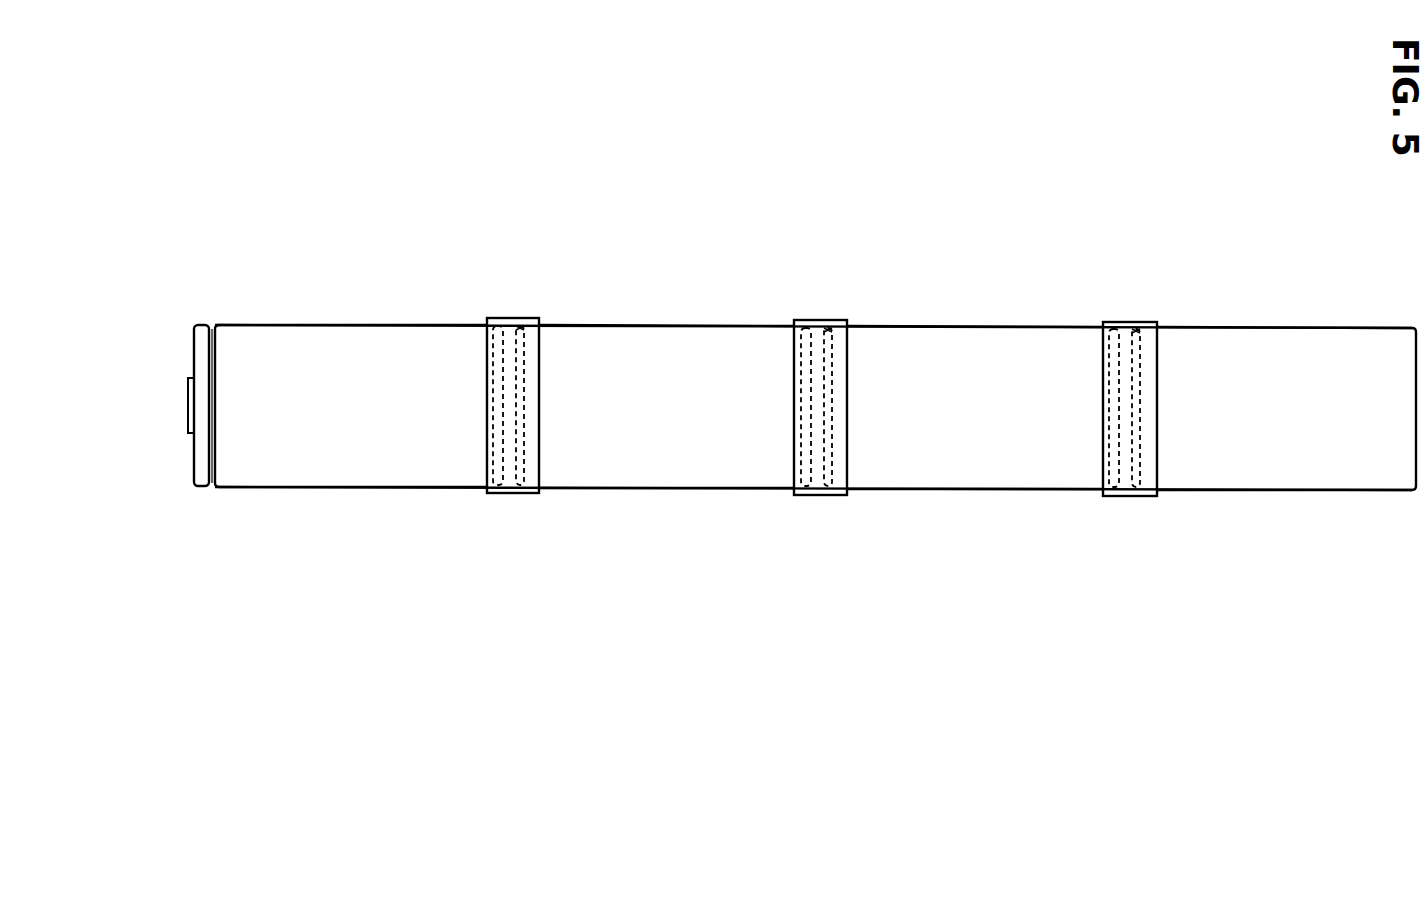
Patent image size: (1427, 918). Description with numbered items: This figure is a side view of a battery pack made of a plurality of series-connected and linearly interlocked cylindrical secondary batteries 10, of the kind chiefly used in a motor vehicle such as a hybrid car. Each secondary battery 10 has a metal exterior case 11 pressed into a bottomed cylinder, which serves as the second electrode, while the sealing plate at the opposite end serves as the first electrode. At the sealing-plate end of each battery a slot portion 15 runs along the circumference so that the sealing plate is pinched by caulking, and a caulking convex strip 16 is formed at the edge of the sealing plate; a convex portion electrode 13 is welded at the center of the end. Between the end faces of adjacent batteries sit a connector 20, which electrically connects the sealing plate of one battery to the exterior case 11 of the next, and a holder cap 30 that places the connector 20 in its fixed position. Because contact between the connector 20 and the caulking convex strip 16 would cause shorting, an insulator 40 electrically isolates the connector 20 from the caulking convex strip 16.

The secondary battery 10 is at (340, 310).
The exterior case 11 is at (367, 446).
The convex portion electrode 13 is at (190, 400).
The slot portion 15 is at (212, 495).
The caulking convex strip 16 is at (192, 472).
The connector 20 is at (482, 363).
The holder cap 30 is at (514, 510).
The insulator 40 is at (518, 325).